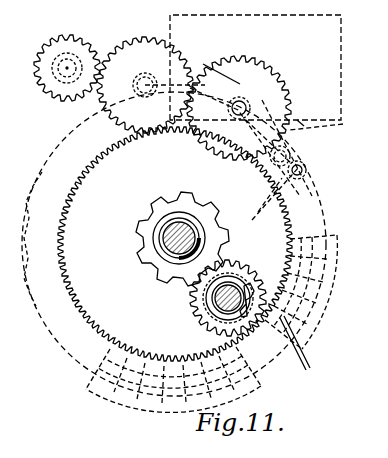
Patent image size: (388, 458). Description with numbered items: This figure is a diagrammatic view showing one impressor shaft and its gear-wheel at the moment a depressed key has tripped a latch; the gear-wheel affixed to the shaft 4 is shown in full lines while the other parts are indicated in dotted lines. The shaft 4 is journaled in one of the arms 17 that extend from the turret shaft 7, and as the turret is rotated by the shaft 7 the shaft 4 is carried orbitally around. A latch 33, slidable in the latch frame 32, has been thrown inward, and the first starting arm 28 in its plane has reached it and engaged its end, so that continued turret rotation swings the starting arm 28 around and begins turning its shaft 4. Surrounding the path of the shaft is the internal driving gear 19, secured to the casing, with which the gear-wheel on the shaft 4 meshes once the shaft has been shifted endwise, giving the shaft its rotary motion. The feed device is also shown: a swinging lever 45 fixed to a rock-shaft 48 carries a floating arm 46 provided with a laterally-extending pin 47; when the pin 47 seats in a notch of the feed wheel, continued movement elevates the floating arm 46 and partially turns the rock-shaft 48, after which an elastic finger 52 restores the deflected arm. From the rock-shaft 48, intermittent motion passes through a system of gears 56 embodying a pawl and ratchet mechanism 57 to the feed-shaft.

The shaft 4 is at (243, 278).
The shaft 7 is at (178, 240).
The arms 17 is at (192, 298).
The internal driving gear 19 is at (56, 273).
The starting arm 28 is at (264, 287).
The latch frame 32 is at (306, 340).
The latch 33 is at (312, 369).
The swinging lever 45 is at (296, 152).
The floating arm 46 is at (293, 183).
The pin 47 is at (273, 196).
The rock-shaft 48 is at (242, 106).
The elastic finger 52 is at (266, 126).
The system of gears 56 is at (211, 60).
The pawl and ratchet mechanism 57 is at (330, 120).